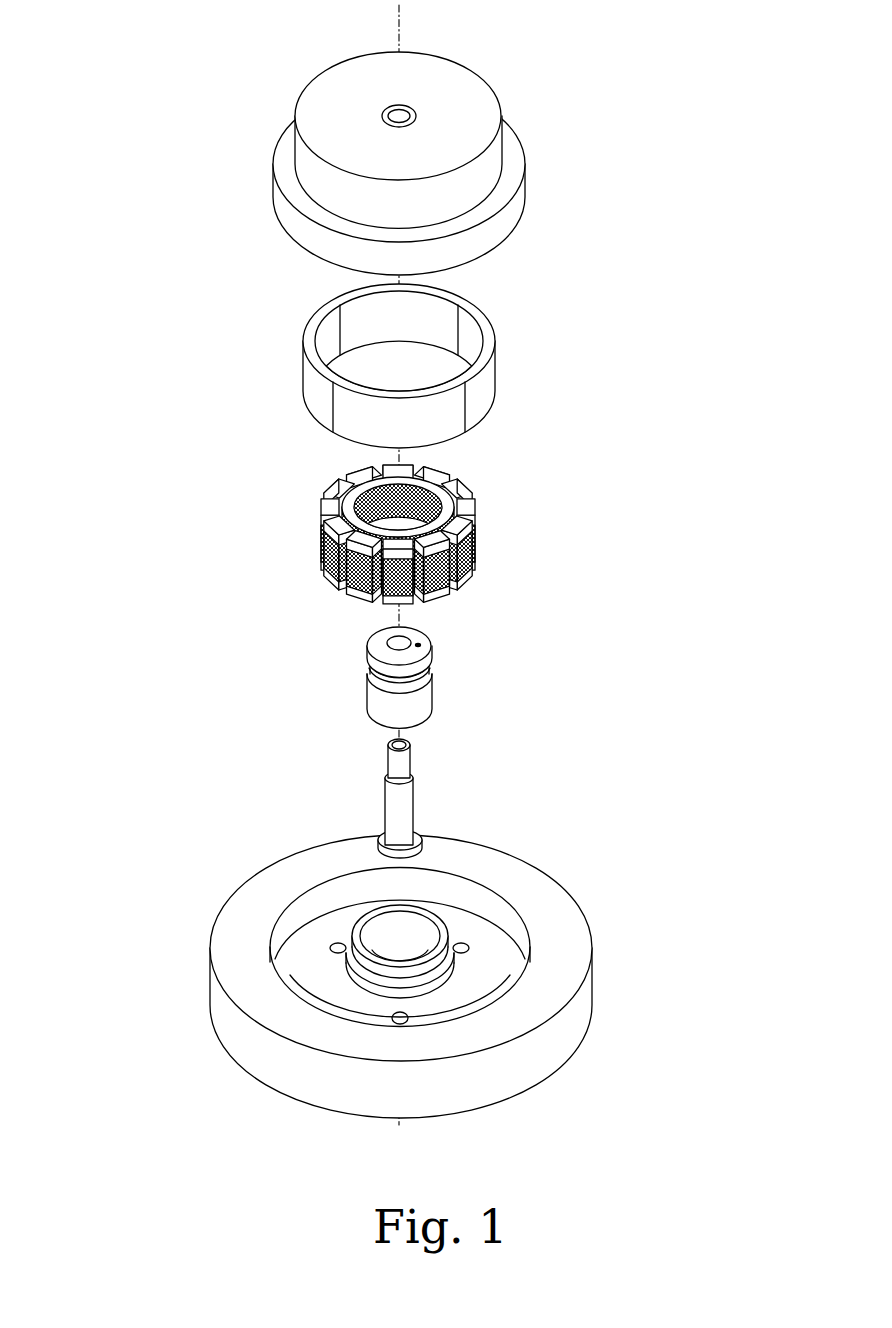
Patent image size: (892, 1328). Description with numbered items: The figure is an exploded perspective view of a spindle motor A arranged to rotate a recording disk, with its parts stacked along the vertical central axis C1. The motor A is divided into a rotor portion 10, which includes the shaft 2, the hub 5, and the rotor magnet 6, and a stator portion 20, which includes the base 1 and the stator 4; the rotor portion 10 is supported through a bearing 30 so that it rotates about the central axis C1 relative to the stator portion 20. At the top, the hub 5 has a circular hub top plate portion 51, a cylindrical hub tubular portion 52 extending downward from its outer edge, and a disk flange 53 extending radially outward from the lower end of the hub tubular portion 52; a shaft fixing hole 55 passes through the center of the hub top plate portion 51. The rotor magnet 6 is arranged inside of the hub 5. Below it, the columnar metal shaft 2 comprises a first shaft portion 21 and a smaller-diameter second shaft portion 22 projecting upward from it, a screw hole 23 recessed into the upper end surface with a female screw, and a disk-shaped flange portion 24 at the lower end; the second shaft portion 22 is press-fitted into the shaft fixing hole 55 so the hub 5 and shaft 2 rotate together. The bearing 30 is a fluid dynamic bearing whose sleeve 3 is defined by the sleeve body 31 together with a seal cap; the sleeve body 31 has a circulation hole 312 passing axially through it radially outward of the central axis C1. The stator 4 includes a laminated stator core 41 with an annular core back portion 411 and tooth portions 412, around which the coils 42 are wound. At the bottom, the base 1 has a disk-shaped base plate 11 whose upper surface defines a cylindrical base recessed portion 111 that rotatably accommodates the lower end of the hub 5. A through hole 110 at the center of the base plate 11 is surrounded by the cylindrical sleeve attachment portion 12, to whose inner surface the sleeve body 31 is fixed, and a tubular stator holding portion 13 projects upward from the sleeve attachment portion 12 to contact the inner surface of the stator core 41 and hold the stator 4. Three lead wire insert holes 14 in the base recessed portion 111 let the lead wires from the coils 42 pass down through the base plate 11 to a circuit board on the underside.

The motor A is at (154, 107).
The central axis C1 is at (405, 27).
The rotor portion 10 is at (733, 280).
The stator portion 20 is at (140, 585).
The base 1 is at (330, 852).
The base plate 11 is at (517, 963).
The through hole 110 is at (413, 952).
The base recessed portion 111 is at (323, 1000).
The sleeve attachment portion 12 is at (330, 948).
The stator holding portion 13 is at (357, 918).
The lead wire insert hole 14 is at (400, 1024).
The shaft 2 is at (417, 805).
The first shaft portion 21 is at (391, 807).
The second shaft portion 22 is at (391, 767).
The screw hole 23 is at (408, 748).
The flange portion 24 is at (420, 840).
The sleeve 3 is at (373, 695).
The bearing 30 is at (421, 692).
The sleeve body 31 is at (373, 645).
The circulation hole 312 is at (418, 645).
The stator 4 is at (318, 561).
The stator core 41 is at (540, 466).
The annular core back portion 411 is at (466, 488).
The tooth portions 412 is at (474, 513).
The coils 42 is at (482, 540).
The hub 5 is at (510, 215).
The hub top plate portion 51 is at (452, 88).
The hub tubular portion 52 is at (495, 150).
The disk flange 53 is at (288, 200).
The shaft fixing hole 55 is at (388, 108).
The rotor magnet 6 is at (495, 349).